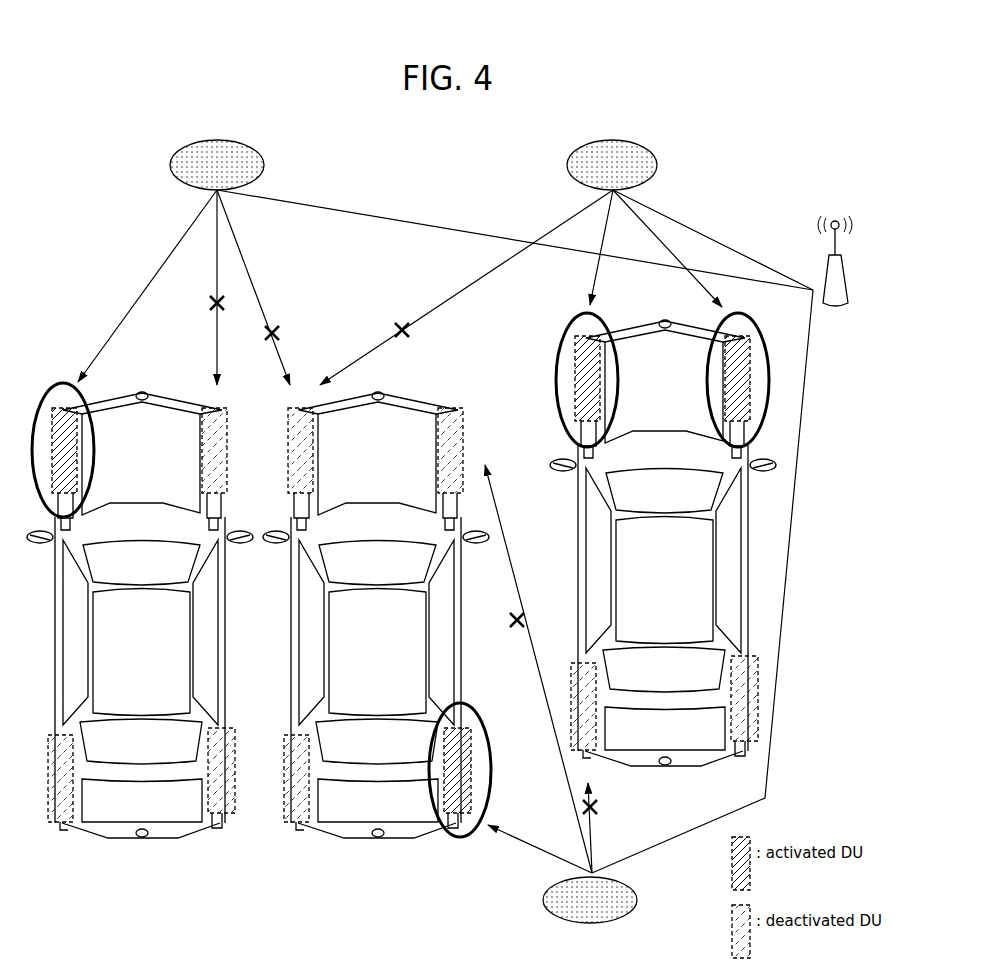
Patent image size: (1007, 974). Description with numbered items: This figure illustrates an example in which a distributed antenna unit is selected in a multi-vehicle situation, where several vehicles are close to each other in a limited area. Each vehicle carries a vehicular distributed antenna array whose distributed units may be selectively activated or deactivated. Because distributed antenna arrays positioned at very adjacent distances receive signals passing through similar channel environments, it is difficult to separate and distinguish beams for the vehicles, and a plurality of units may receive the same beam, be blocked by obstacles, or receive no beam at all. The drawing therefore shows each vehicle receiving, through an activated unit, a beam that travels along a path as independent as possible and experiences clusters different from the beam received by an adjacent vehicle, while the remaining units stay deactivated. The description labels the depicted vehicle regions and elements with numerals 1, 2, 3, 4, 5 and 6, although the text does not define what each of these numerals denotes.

The vehicle roof 1 is at (403, 616).
The vehicle trunk 2 is at (403, 764).
The vehicle hood 3 is at (402, 428).
The vehicle window 4 is at (402, 617).
The vehicle side panel 5 is at (402, 596).
The vehicle lamp 6 is at (403, 578).